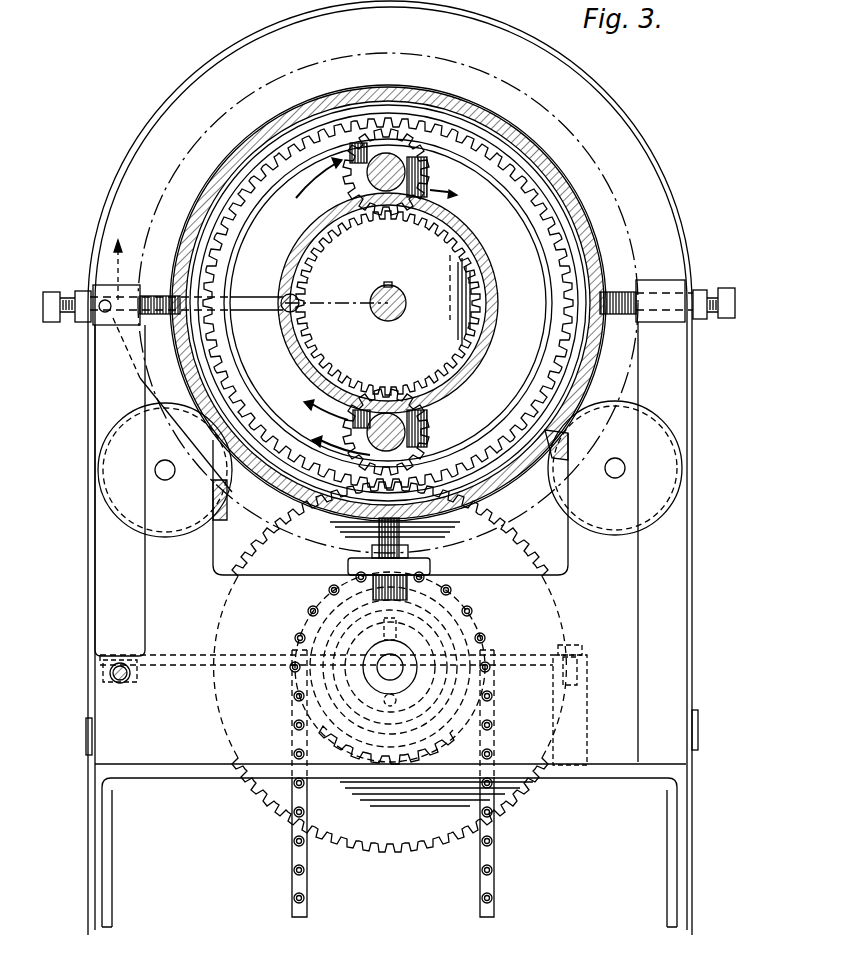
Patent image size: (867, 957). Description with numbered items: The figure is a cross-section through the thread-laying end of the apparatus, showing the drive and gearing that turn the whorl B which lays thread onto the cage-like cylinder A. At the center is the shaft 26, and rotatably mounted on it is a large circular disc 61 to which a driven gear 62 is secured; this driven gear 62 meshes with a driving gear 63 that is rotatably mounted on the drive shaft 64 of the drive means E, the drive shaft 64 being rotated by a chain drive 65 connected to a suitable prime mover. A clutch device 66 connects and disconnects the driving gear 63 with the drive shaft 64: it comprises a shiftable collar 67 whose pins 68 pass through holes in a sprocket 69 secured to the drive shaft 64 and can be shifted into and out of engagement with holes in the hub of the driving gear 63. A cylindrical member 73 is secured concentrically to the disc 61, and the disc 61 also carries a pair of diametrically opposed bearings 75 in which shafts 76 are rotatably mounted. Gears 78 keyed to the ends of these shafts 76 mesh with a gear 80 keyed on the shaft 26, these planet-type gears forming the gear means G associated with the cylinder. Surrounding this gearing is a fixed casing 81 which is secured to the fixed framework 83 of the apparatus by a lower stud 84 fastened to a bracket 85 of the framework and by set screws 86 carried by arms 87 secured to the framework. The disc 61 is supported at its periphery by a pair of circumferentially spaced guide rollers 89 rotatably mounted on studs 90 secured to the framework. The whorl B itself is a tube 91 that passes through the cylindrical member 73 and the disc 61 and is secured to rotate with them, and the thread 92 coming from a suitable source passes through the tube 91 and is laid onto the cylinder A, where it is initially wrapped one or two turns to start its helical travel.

The cage-like cylinder A is at (590, 153).
The whorl B is at (105, 312).
The drive means E is at (500, 547).
The gear means G is at (434, 176).
The shaft 26 is at (388, 316).
The circular disc 61 is at (566, 133).
The driven gear 62 is at (518, 126).
The driving gear 63 is at (362, 850).
The drive shaft 64 is at (385, 670).
The chain drive 65 is at (492, 843).
The clutch device 66 is at (452, 668).
The shiftable collar 67 is at (404, 693).
The pins 68 is at (383, 640).
The sprocket 69 is at (494, 729).
The cylindrical member 73 is at (303, 247).
The bearings 75 is at (356, 176).
The shafts 76 is at (356, 188).
The gears 78 is at (432, 191).
The gear 80 is at (460, 243).
The fixed casing 81 is at (578, 212).
The fixed framework 83 is at (168, 778).
The lower stud 84 is at (378, 536).
The bracket 85 is at (431, 567).
The set screws 86 is at (56, 296).
The arms 87 is at (145, 576).
The guide rollers 89 is at (243, 526).
The studs 90 is at (164, 474).
The tube 91 is at (283, 310).
The thread 92 is at (113, 330).